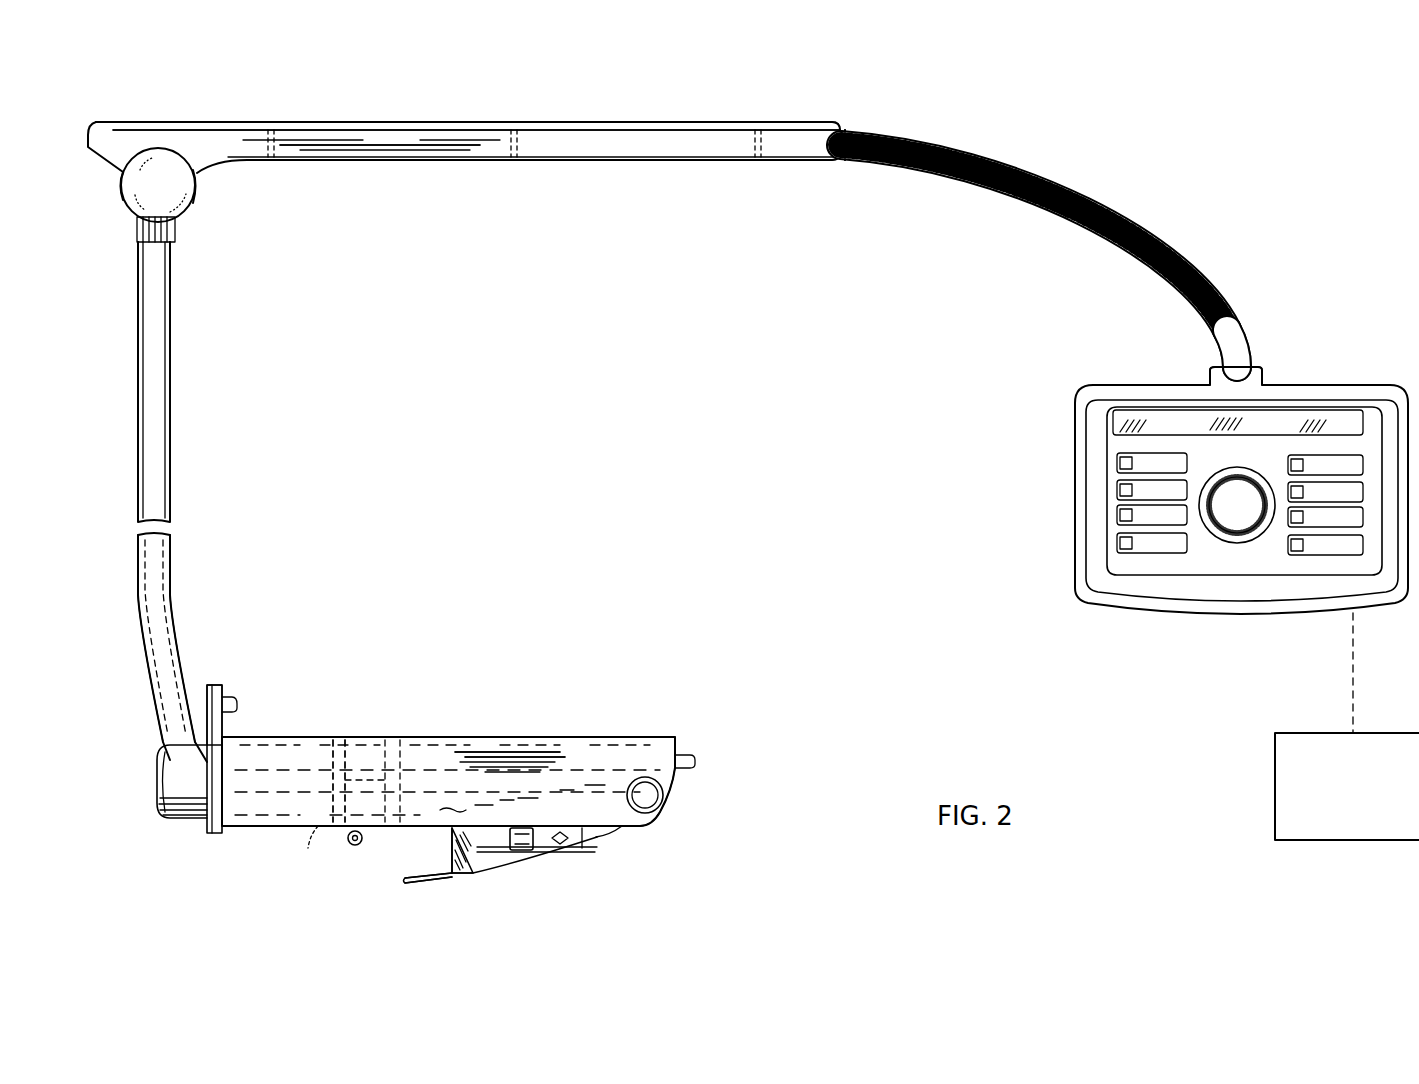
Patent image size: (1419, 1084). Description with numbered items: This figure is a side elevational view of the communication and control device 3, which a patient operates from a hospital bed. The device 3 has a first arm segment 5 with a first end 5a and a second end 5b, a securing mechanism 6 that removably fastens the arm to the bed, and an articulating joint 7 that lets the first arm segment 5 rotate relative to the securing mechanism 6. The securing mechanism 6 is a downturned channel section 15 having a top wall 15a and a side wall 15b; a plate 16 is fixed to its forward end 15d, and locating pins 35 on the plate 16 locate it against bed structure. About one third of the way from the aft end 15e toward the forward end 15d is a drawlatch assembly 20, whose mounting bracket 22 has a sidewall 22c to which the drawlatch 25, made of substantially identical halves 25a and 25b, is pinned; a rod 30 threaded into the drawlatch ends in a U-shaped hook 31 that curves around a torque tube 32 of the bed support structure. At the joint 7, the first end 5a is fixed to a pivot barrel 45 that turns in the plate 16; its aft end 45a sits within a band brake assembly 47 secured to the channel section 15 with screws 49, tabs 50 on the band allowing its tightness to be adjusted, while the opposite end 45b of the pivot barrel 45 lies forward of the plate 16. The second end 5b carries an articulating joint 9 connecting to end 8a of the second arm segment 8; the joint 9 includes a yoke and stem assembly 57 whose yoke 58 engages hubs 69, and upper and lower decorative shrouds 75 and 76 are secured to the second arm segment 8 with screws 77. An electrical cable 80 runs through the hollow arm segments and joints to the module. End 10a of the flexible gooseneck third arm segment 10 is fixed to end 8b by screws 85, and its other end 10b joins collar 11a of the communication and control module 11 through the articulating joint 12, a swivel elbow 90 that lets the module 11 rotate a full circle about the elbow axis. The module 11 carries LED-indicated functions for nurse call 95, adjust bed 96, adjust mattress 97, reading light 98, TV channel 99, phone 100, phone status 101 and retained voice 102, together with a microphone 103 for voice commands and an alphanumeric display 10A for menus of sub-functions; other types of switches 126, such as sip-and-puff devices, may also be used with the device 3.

The communication and control device 3 is at (950, 662).
The first arm segment 5 is at (184, 434).
The first end of first arm segment 5a is at (148, 728).
The second end of first arm segment 5b is at (172, 250).
The securing mechanism 6 is at (556, 686).
The articulating joint 7 is at (160, 860).
The second arm segment 8 is at (570, 122).
The end of second arm segment 8a is at (201, 122).
The end of second arm segment 8b is at (848, 122).
The articulating joint 9 is at (266, 226).
The third arm segment 10 is at (1132, 204).
The end of third flexible arm segment 10a is at (858, 164).
The end of third flexible arm segment 10b is at (1197, 325).
The alpha numeric display 10A is at (1155, 428).
The communication and control module 11 is at (1039, 538).
The collar 11a is at (1265, 376).
The articulating joint 12 is at (1319, 330).
The channel section 15 is at (424, 732).
The top wall 15a is at (328, 737).
The side wall 15b is at (448, 760).
The forward end 15d is at (232, 728).
The aft end 15e is at (675, 735).
The plate 16 is at (215, 690).
The drawlatch assembly 20 is at (494, 896).
The mounting bracket 22 is at (541, 867).
The sidewall of mounting bracket 22c is at (582, 850).
The drawlatch 25 is at (419, 895).
The drawlatch half 25a is at (362, 838).
The drawlatch half 25b is at (453, 838).
The rod 30 is at (600, 840).
The U-shaped hook 31 is at (672, 798).
The torque tube 32 is at (660, 820).
The locating pins 35 is at (238, 712).
The pivot barrel 45 is at (218, 846).
The aft end of pivot barrel 45a is at (324, 850).
The clamp knob 45b is at (163, 808).
The band brake assembly 47 is at (308, 880).
The screws 49 is at (371, 772).
The tabs 50 is at (355, 846).
The yoke and stem assembly 57 is at (126, 258).
The yoke 58 is at (188, 230).
The hub 69 is at (132, 205).
The upper decorative shroud 75 is at (394, 122).
The lower decorative shroud 76 is at (483, 160).
The screws 77 is at (271, 160).
The electrical cable 80 is at (690, 762).
The screws 85 is at (835, 140).
The swivel elbow 90 is at (1242, 340).
The nurse call function 95 is at (1118, 462).
The adjust bed function 96 is at (1118, 490).
The adjust mattress function 97 is at (1118, 515).
The reading light function 98 is at (1118, 545).
The TV channel function 99 is at (1325, 463).
The phone function 100 is at (1291, 490).
The phone status function 101 is at (1283, 520).
The retained voice function 102 is at (1322, 545).
The microphone 103 is at (1249, 538).
The switches 126 is at (1273, 789).